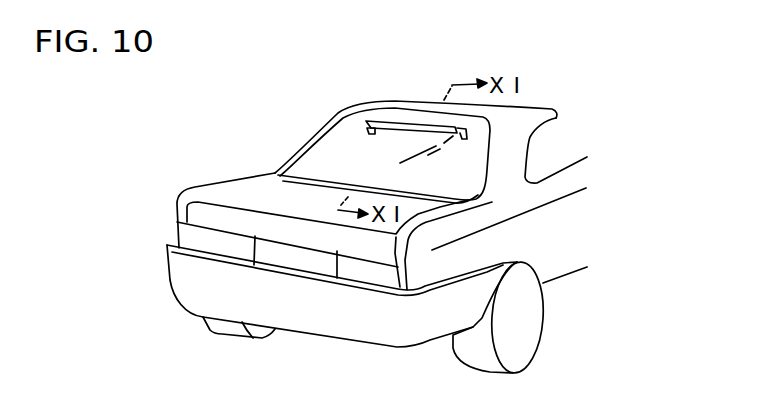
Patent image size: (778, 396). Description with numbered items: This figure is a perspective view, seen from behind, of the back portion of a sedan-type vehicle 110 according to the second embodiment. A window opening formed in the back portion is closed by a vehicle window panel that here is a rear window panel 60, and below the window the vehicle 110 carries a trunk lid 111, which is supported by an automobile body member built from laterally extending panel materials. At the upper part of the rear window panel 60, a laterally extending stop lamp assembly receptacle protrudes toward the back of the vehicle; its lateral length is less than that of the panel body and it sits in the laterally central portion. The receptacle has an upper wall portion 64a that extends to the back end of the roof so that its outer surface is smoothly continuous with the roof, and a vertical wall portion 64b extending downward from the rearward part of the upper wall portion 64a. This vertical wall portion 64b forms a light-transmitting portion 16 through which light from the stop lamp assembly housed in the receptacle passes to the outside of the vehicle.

The vehicle 110 is at (537, 106).
The trunk lid 111 is at (247, 199).
The rear window panel 60 is at (320, 157).
The upper wall portion 64a is at (412, 124).
The vertical wall portion 64b is at (361, 96).
The light-transmitting portion 16 is at (384, 122).